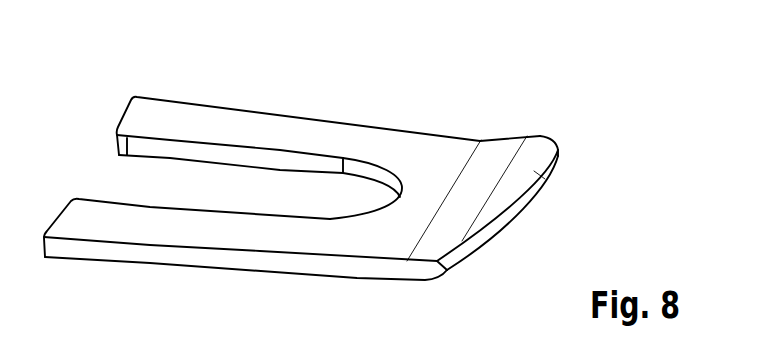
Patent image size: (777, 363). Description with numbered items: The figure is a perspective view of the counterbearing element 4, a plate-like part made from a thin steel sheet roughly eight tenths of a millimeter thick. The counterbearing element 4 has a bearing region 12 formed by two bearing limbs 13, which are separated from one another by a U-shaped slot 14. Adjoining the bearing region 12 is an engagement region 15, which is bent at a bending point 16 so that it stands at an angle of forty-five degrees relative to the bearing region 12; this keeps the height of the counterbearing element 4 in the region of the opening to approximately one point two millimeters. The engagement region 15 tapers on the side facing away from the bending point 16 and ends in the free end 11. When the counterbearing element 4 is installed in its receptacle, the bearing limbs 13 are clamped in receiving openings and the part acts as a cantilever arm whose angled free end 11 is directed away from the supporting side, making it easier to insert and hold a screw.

The counterbearing element 4 is at (373, 87).
The free end 11 is at (546, 161).
The bearing region 12 is at (423, 162).
The bearing limbs 13 is at (163, 223).
The U-shaped slot 14 is at (259, 184).
The engagement region 15 is at (520, 167).
The bending point 16 is at (433, 233).